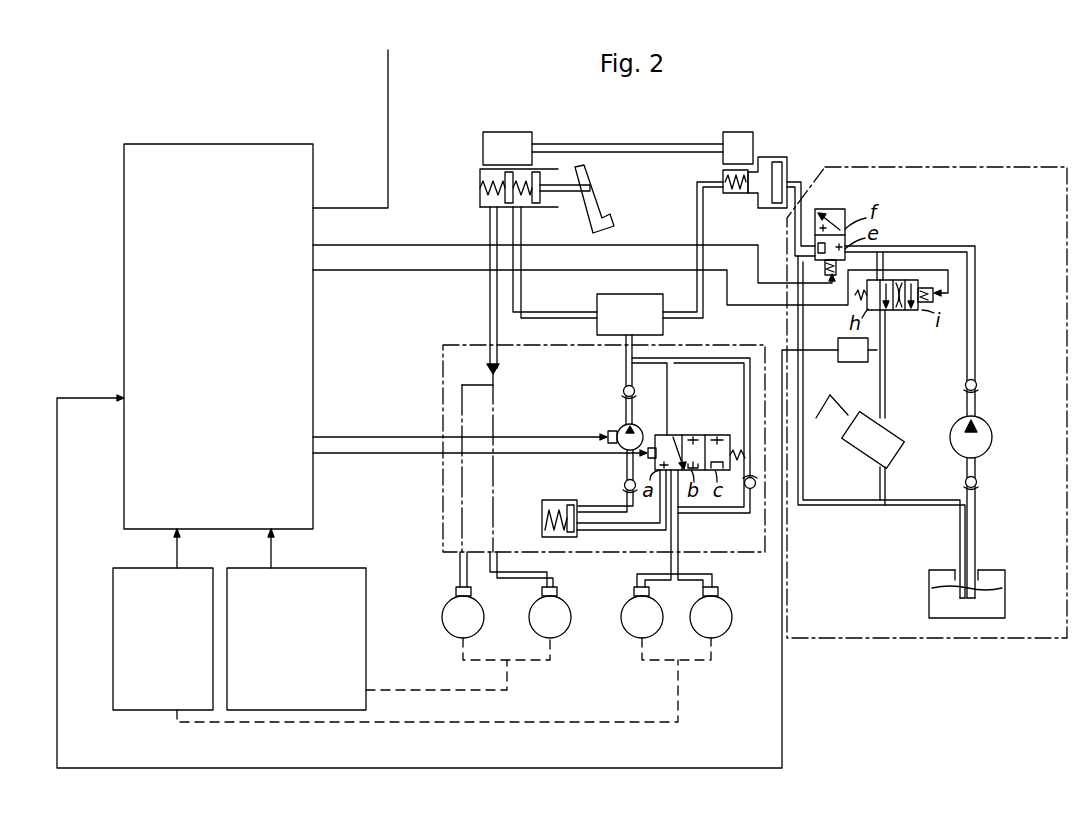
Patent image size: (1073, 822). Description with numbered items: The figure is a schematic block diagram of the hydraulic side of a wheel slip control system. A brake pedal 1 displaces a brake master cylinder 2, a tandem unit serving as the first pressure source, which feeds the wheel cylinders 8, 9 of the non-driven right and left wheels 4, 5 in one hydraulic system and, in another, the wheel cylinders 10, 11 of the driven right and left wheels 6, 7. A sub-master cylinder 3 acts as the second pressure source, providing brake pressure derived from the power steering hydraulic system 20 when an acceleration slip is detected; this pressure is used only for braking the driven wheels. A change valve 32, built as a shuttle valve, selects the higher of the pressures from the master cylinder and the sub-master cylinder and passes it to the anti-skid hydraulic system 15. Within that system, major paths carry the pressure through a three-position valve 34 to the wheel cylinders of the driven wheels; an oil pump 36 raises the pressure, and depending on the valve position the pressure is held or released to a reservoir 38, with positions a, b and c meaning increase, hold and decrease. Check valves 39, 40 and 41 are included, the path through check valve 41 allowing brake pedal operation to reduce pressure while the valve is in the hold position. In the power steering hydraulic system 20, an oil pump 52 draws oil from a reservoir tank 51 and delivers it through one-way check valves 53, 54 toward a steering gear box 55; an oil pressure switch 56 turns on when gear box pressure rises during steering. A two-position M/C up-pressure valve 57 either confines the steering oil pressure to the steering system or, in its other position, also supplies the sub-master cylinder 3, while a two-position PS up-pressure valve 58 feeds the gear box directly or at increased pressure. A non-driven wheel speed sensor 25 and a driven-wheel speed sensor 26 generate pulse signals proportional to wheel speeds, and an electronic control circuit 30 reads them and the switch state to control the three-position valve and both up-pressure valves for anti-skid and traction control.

The brake pedal 1 is at (600, 207).
The brake master cylinder 2 is at (488, 132).
The sub-master cylinder 3 is at (753, 141).
The non-driven right wheel 4 is at (442, 617).
The non-driven left wheel 5 is at (529, 617).
The driven right wheel 6 is at (621, 617).
The driven left wheel 7 is at (732, 617).
The wheel cylinder 8 is at (455, 588).
The wheel cylinder 9 is at (554, 588).
The wheel cylinder 10 is at (634, 588).
The wheel cylinder 11 is at (719, 588).
The hydraulic system 15 is at (452, 345).
The power steering hydraulic system 20 is at (962, 167).
The non-driven wheel speed sensor 25 is at (340, 568).
The driven-wheel speed sensor 26 is at (113, 575).
The electronic control circuit 30 is at (250, 144).
The change valve 32 is at (597, 306).
The 3-position valve 34 is at (704, 435).
The oil pump 36 is at (618, 428).
The reservoir 38 is at (545, 501).
The check valve 39 is at (622, 388).
The check valve 40 is at (624, 485).
The check valve 41 is at (751, 490).
The reservoir tank 51 is at (929, 600).
The oil pump 52 is at (992, 428).
The check valve 53 is at (978, 385).
The check valve 54 is at (979, 482).
The steering gear box 55 is at (896, 430).
The oil pressure switch 56 is at (842, 338).
The 2-position valve 57 is at (845, 211).
The 2-position valve 58 is at (912, 312).